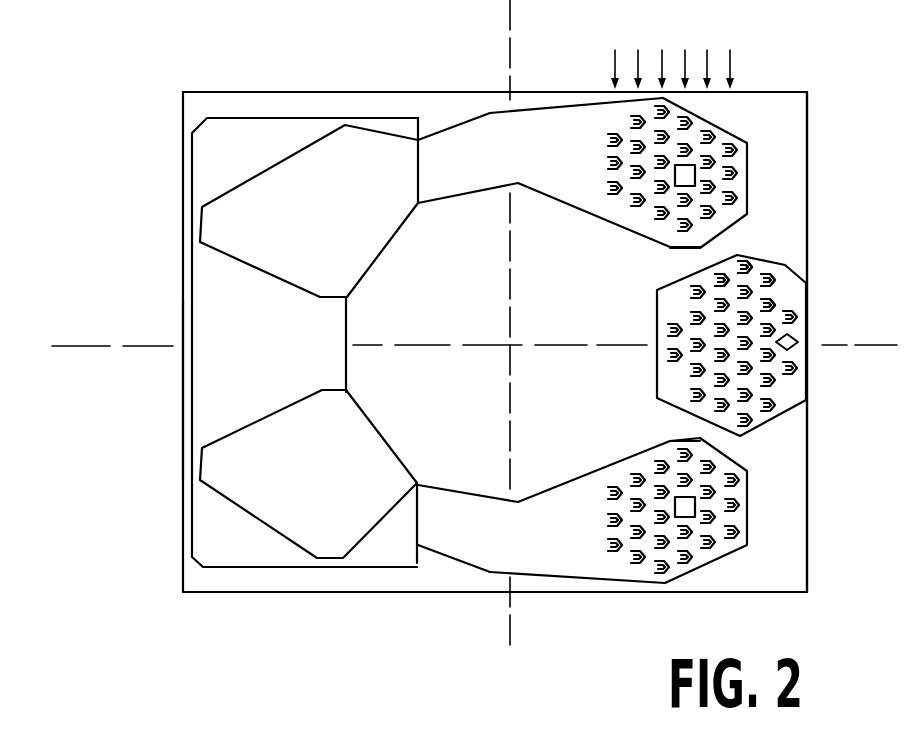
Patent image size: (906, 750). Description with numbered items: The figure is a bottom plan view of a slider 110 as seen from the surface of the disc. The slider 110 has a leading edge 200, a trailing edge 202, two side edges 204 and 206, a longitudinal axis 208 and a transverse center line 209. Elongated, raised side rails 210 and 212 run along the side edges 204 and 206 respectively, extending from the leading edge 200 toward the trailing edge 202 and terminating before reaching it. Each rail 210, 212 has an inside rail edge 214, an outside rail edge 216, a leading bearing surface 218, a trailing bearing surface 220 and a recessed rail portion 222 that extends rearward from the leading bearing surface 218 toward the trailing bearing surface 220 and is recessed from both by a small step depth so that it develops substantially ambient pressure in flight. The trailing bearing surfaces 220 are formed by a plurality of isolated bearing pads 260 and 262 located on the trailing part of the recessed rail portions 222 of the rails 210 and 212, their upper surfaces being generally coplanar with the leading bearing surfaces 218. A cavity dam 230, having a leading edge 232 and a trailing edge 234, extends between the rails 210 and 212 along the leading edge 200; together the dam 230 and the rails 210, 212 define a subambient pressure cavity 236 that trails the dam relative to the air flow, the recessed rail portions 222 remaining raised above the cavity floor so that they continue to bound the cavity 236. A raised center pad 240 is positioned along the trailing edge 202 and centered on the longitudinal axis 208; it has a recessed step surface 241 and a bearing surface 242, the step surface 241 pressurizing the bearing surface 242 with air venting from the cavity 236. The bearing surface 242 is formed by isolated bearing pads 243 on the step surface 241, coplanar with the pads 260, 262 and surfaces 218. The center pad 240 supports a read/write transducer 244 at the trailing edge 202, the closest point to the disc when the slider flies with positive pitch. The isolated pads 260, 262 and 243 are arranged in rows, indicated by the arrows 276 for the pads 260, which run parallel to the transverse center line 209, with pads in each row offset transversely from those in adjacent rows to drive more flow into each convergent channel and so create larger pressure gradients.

The slider 110 is at (135, 103).
The leading edge 200 is at (182, 522).
The trailing edge 202 is at (808, 518).
The side edge 204 is at (363, 90).
The side edge 206 is at (338, 592).
The longitudinal axis 208 is at (138, 345).
The transverse center line 209 is at (512, 637).
The side rail 210 is at (281, 144).
The side rail 212 is at (283, 537).
The inside rail edge 214 is at (436, 200).
The outside rail edge 216 is at (455, 128).
The leading bearing surface 218 is at (330, 177).
The trailing bearing surface 220 is at (739, 345).
The recessed rail portion 222 is at (543, 123).
The cavity dam 230 is at (210, 378).
The leading edge 232 is at (183, 413).
The trailing edge 234 is at (347, 362).
The subambient pressure cavity 236 is at (460, 412).
The center pad 240 is at (717, 318).
The recessed step surface 241 is at (672, 386).
The bearing surface 242 is at (782, 291).
The bearing pads 243 is at (768, 275).
The read/write transducer 244 is at (790, 337).
The bearing pads 260 is at (737, 152).
The bearing pads 262 is at (613, 552).
The arrows 276 is at (672, 47).